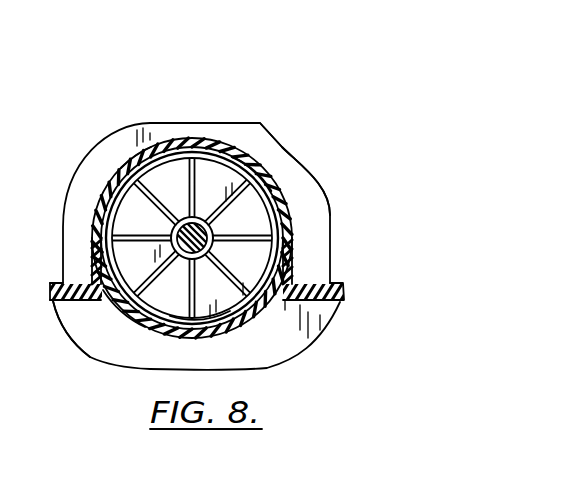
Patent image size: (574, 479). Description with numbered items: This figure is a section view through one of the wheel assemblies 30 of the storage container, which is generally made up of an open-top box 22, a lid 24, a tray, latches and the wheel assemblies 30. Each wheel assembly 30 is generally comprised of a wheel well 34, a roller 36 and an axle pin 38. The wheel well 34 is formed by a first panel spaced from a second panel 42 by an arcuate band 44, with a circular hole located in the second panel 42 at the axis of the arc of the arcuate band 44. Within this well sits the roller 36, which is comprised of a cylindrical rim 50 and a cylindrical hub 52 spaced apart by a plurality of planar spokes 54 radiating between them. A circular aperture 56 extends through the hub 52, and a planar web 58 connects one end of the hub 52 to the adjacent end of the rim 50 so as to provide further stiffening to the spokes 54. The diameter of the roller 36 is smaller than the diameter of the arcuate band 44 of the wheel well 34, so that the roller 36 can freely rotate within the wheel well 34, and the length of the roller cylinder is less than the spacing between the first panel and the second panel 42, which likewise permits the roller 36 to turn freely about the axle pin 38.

The open-top box 22 is at (61, 213).
The lid 24 is at (337, 333).
The wheel assembly 30 is at (128, 211).
The wheel well 34 is at (283, 192).
The roller 36 is at (103, 264).
The axle pin 38 is at (199, 220).
The second panel 42 is at (88, 307).
The arcuate band 44 is at (170, 137).
The cylindrical rim 50 is at (124, 315).
The cylindrical hub 52 is at (284, 246).
The planar spokes 54 is at (212, 303).
The circular aperture 56 is at (141, 161).
The planar web 58 is at (254, 202).